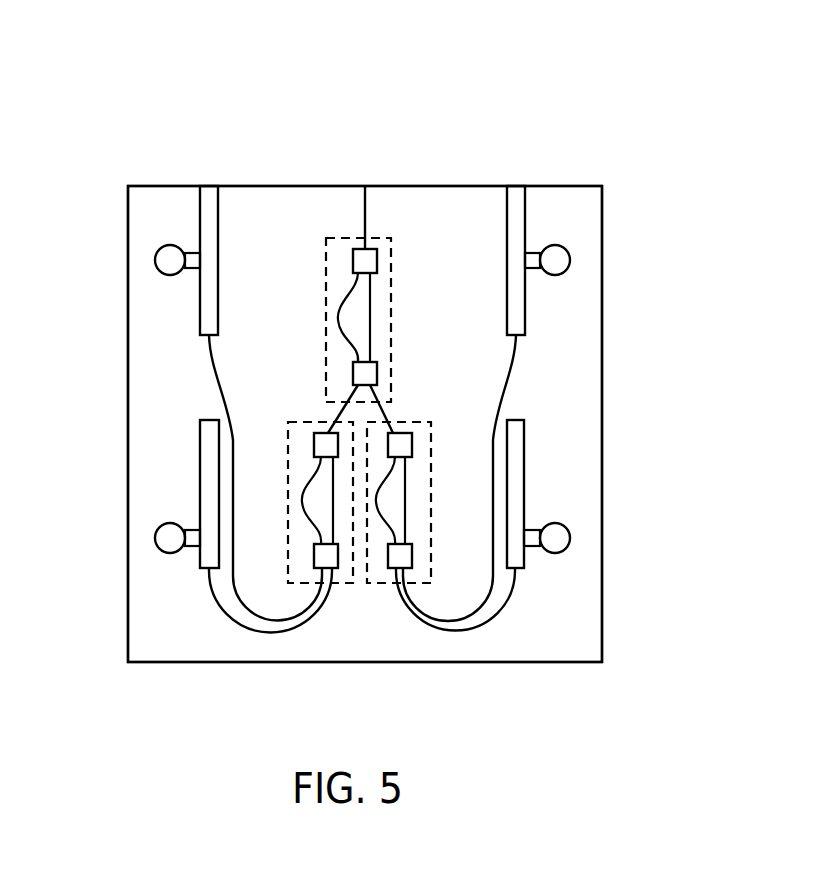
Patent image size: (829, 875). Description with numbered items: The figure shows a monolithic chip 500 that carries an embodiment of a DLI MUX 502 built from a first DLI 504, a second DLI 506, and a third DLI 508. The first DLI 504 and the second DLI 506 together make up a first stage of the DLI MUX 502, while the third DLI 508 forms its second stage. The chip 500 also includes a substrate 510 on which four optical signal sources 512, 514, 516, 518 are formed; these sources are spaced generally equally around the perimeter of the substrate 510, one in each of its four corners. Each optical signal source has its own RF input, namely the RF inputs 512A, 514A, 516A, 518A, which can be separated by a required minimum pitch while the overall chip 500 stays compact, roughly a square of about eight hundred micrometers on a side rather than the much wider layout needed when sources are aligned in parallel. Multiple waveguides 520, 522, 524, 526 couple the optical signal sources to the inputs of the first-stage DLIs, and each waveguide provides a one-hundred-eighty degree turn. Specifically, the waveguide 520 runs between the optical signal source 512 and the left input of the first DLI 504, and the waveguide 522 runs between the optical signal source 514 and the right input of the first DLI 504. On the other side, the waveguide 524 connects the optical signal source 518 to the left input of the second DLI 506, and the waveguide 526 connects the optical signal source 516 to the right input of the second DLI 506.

The monolithic chip 500 is at (232, 83).
The DLI MUX 502 is at (426, 203).
The first DLI 504 is at (287, 433).
The second DLI 506 is at (432, 438).
The third DLI 508 is at (325, 267).
The substrate 510 is at (184, 646).
The optical signal source 512 is at (145, 220).
The RF input 512A is at (155, 261).
The optical signal source 514 is at (140, 559).
The RF input 514A is at (155, 538).
The optical signal source 516 is at (590, 234).
The RF input 516A is at (570, 262).
The optical signal source 518 is at (590, 556).
The RF input 518A is at (570, 538).
The waveguide 520 is at (243, 603).
The waveguide 522 is at (288, 628).
The waveguide 524 is at (452, 630).
The waveguide 526 is at (483, 602).